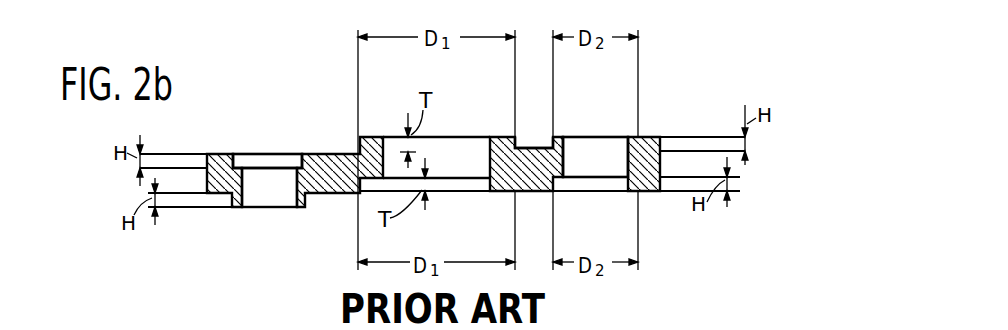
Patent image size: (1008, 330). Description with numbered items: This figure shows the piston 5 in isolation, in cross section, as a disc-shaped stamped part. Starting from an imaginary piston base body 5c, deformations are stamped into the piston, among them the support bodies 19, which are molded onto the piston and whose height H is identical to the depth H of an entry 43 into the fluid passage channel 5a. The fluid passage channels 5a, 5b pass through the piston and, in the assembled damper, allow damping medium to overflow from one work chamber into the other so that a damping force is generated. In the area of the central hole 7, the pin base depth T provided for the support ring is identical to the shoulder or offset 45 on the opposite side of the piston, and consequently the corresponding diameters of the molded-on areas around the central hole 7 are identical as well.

The piston 5 is at (778, 171).
The fluid passage channel 5a is at (279, 198).
The fluid passage channel 5b is at (613, 160).
The piston base body 5c is at (335, 222).
The central hole 7 is at (457, 160).
The support body 19 is at (641, 136).
The entry 43 is at (249, 152).
The shoulder 45 is at (522, 137).